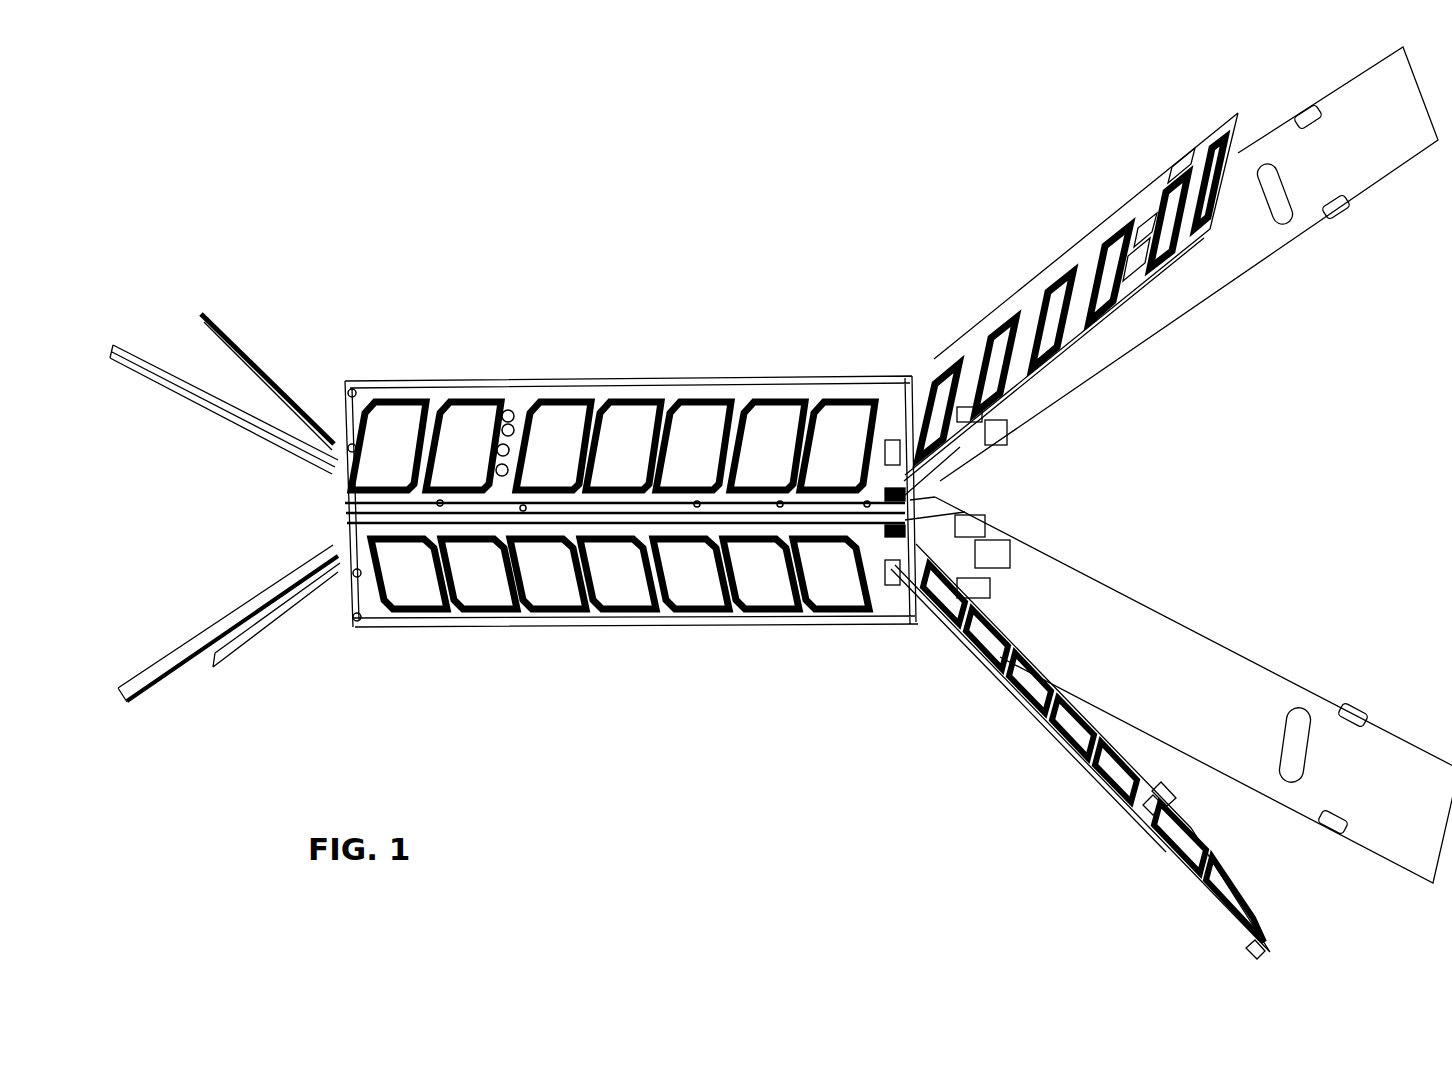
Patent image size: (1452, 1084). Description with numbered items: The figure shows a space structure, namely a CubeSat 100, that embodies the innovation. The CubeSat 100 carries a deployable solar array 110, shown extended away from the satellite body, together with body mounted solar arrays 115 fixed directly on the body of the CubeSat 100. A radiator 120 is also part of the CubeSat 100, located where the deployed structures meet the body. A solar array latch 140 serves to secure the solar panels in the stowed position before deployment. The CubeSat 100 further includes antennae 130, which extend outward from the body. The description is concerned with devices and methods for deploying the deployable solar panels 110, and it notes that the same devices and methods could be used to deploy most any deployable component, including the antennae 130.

The CubeSat 100 is at (746, 203).
The deployable solar array 110 is at (1061, 240).
The body mounted solar arrays 115 is at (619, 432).
The radiator 120 is at (942, 497).
The antennae 130 is at (147, 324).
The solar array latch 140 is at (1142, 902).